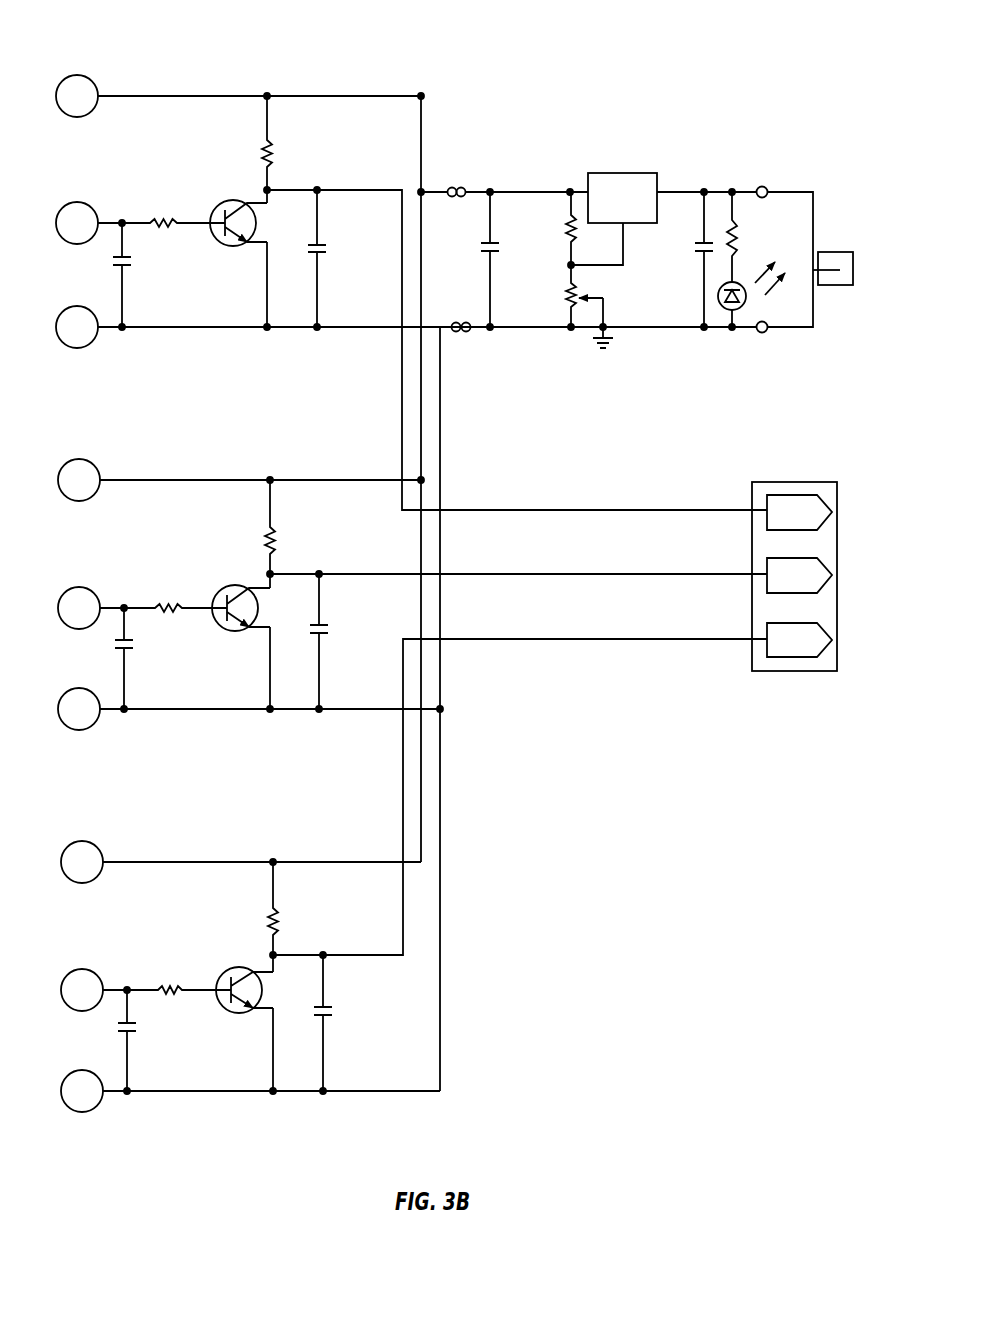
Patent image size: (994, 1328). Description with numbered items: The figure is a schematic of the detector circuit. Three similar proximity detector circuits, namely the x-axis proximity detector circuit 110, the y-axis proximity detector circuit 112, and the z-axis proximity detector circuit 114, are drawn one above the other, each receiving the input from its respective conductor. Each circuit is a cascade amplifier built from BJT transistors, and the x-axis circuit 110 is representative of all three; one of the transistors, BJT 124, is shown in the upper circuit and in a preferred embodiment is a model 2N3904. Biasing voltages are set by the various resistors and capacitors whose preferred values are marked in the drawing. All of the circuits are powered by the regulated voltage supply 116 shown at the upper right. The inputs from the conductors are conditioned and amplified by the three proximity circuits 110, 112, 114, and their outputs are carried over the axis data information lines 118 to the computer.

The x-axis proximity detector circuit 110 is at (310, 75).
The y-axis proximity detector circuit 112 is at (313, 458).
The z-axis proximity detector circuit 114 is at (315, 842).
The regulated voltage supply 116 is at (673, 157).
The axis data information lines 118 is at (740, 483).
The BJT 124 is at (258, 221).